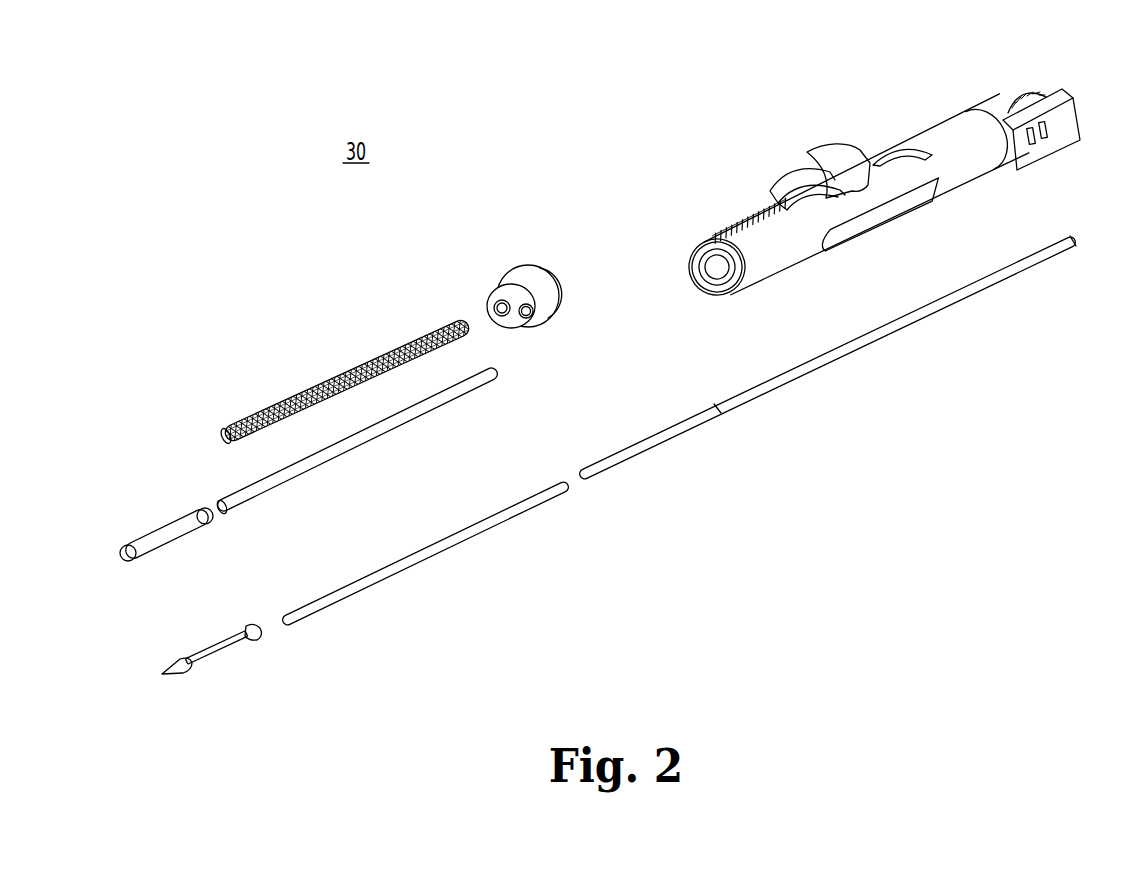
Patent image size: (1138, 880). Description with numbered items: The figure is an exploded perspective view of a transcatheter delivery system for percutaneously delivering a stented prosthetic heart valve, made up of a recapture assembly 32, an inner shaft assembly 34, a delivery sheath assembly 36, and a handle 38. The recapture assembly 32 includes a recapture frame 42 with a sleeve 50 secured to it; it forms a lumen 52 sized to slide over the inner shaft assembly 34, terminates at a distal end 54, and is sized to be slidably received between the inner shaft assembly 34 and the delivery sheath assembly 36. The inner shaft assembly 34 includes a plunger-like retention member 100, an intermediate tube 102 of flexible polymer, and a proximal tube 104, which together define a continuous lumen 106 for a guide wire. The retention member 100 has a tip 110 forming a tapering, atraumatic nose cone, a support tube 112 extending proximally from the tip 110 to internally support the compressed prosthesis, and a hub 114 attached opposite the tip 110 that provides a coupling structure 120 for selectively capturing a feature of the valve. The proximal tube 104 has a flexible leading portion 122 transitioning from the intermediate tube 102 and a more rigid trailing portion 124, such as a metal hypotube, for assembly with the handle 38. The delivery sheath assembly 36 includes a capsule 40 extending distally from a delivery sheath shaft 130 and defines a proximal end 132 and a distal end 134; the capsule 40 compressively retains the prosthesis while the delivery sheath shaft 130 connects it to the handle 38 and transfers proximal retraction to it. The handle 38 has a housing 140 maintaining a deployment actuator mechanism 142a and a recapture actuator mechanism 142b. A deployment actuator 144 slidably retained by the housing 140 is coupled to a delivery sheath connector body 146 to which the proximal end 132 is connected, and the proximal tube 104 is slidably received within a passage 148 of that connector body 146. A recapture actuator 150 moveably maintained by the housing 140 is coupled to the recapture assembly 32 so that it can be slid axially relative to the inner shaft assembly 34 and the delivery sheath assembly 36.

The recapture assembly 32 is at (312, 383).
The inner shaft assembly 34 is at (699, 468).
The delivery sheath assembly 36 is at (288, 497).
The handle 38 is at (875, 201).
The capsule 40 is at (181, 553).
The recapture frame 42 is at (244, 418).
The sleeve 50 is at (368, 366).
The lumen 52 is at (222, 443).
The distal end 54 is at (223, 444).
The retention member 100 is at (201, 658).
The intermediate tube 102 is at (400, 579).
The proximal tube 104 is at (862, 352).
The lumen 106 is at (286, 633).
The tip 110 is at (172, 692).
The support tube 112 is at (211, 675).
The hub 114 is at (247, 633).
The coupling structure 120 is at (254, 628).
The leading portion 122 is at (671, 452).
The trailing portion 124 is at (1031, 280).
The delivery sheath shaft 130 is at (309, 457).
The proximal end 132 is at (491, 378).
The distal end 134 is at (128, 562).
The housing 140 is at (750, 220).
The deployment actuator mechanism 142a is at (852, 127).
The recapture actuator mechanism 142b is at (1048, 87).
The deployment actuator 144 is at (819, 144).
The delivery sheath connector body 146 is at (717, 267).
The passage 148 is at (716, 266).
The recapture actuator 150 is at (1021, 92).